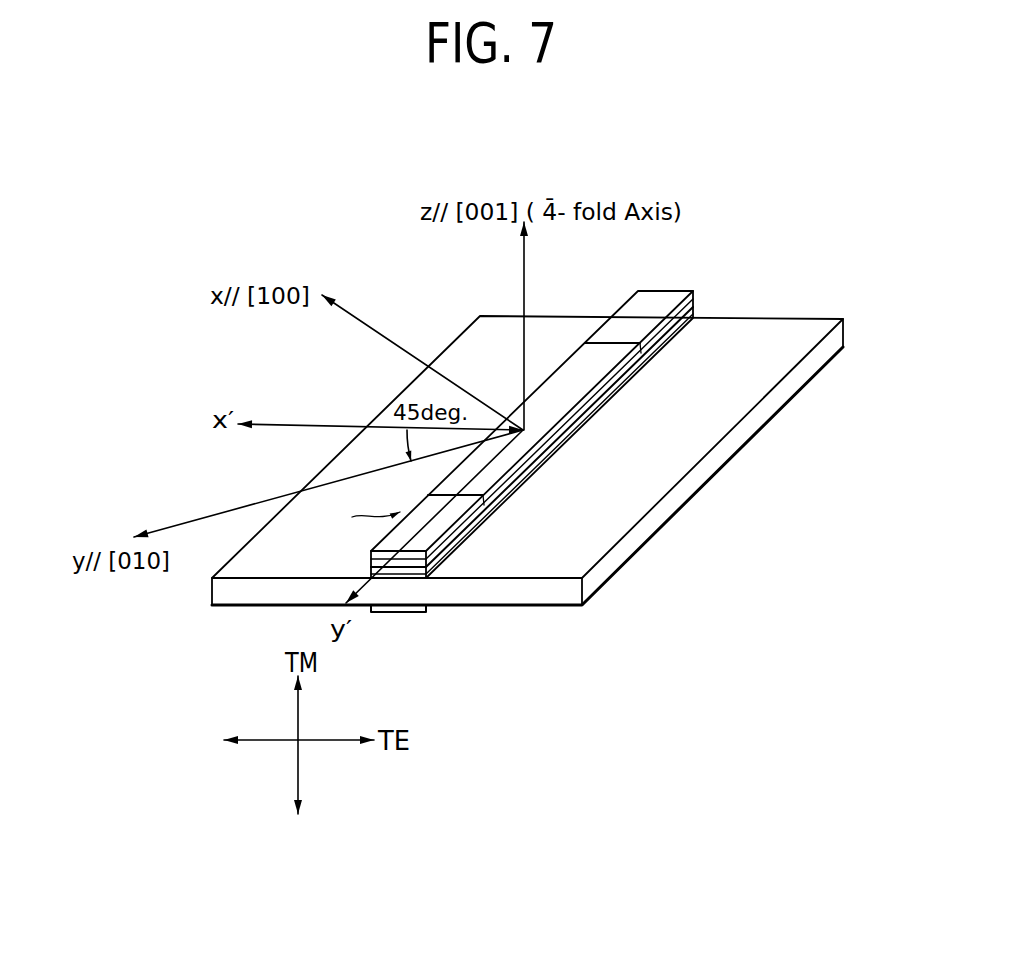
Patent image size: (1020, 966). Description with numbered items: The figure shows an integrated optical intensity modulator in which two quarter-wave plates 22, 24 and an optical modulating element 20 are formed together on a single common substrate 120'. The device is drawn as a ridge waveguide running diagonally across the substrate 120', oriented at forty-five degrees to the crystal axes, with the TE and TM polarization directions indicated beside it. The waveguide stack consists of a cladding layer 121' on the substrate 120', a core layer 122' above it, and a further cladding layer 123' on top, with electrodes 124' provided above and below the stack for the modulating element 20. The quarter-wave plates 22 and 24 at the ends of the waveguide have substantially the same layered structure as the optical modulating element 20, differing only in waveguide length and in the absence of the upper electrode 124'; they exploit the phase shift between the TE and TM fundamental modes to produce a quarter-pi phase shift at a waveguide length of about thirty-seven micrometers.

The optical modulating element 20 is at (544, 458).
The quarter-wave plate 22 is at (624, 458).
The quarter-wave plate 24 is at (356, 517).
The substrate 120' is at (527, 497).
The cladding layer 121' is at (605, 496).
The core layer 122' is at (624, 493).
The cladding layer 123' is at (592, 461).
The electrodes 124' is at (506, 477).